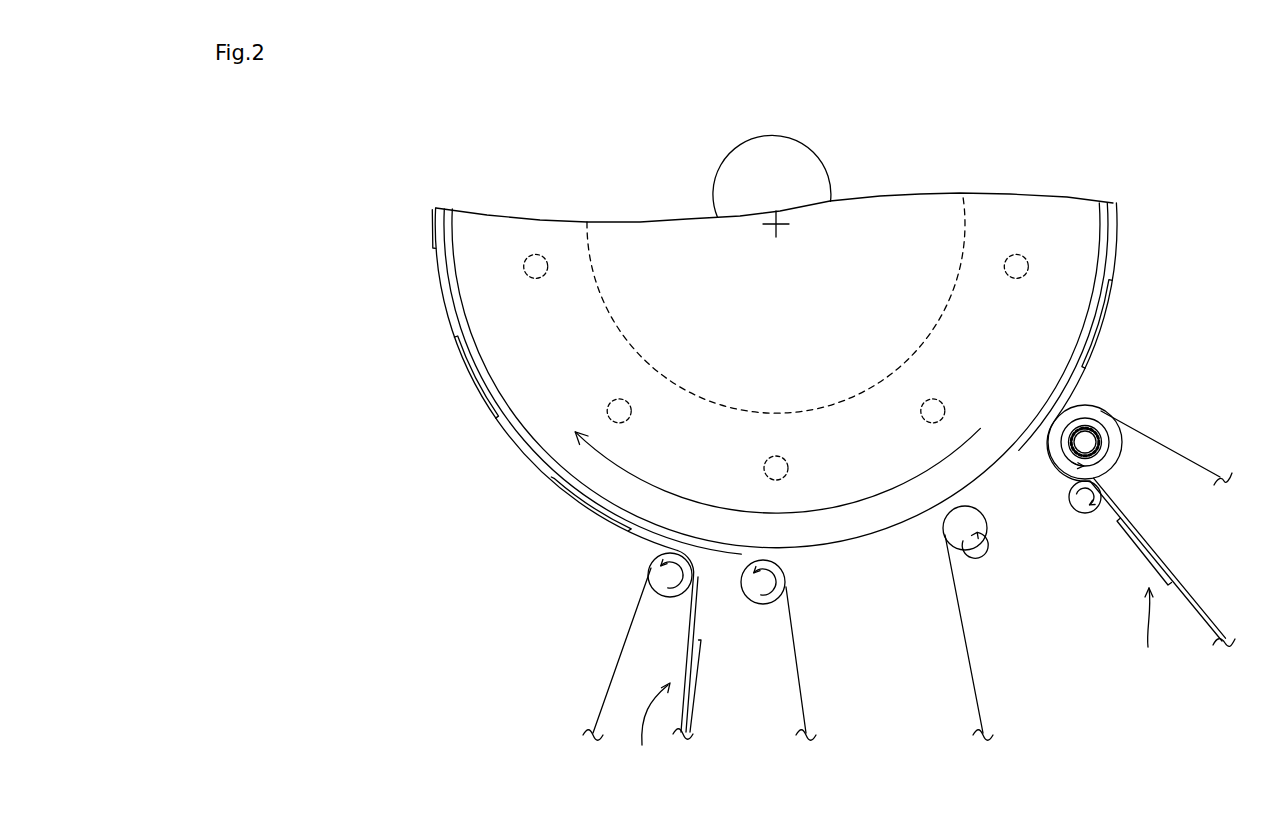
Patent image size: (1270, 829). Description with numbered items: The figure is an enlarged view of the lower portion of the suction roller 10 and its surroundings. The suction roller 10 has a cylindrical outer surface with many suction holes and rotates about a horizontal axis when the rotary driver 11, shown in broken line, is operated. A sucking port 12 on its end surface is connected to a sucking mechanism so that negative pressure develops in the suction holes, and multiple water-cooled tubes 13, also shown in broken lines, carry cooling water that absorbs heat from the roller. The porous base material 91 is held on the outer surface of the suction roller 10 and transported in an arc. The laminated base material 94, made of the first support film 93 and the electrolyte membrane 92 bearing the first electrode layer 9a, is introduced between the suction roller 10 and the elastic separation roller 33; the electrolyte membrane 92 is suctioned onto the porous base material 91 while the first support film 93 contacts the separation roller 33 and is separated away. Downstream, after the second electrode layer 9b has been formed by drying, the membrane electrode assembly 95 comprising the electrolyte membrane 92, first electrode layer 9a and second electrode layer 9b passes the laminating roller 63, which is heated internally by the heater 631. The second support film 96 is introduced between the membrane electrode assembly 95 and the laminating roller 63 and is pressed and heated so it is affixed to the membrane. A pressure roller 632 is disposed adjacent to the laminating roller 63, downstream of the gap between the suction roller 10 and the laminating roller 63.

The suction roller 10 is at (853, 525).
The rotary driver 11 is at (923, 288).
The sucking port 12 is at (763, 258).
The water-cooled tubes 13 is at (542, 278).
The first electrode layer 9a is at (1098, 318).
The second electrode layer 9b is at (1112, 332).
The electrolyte membrane 92 is at (528, 462).
The separation roller 33 is at (648, 587).
The first support film 93 is at (615, 658).
The laminated base material 94 is at (645, 725).
The porous base material 91 is at (798, 664).
The laminating roller 63 is at (1097, 413).
The heater 631 is at (1102, 445).
The pressure roller 632 is at (1078, 504).
The second support film 96 is at (1147, 432).
The membrane electrode assembly 95 is at (1146, 627).